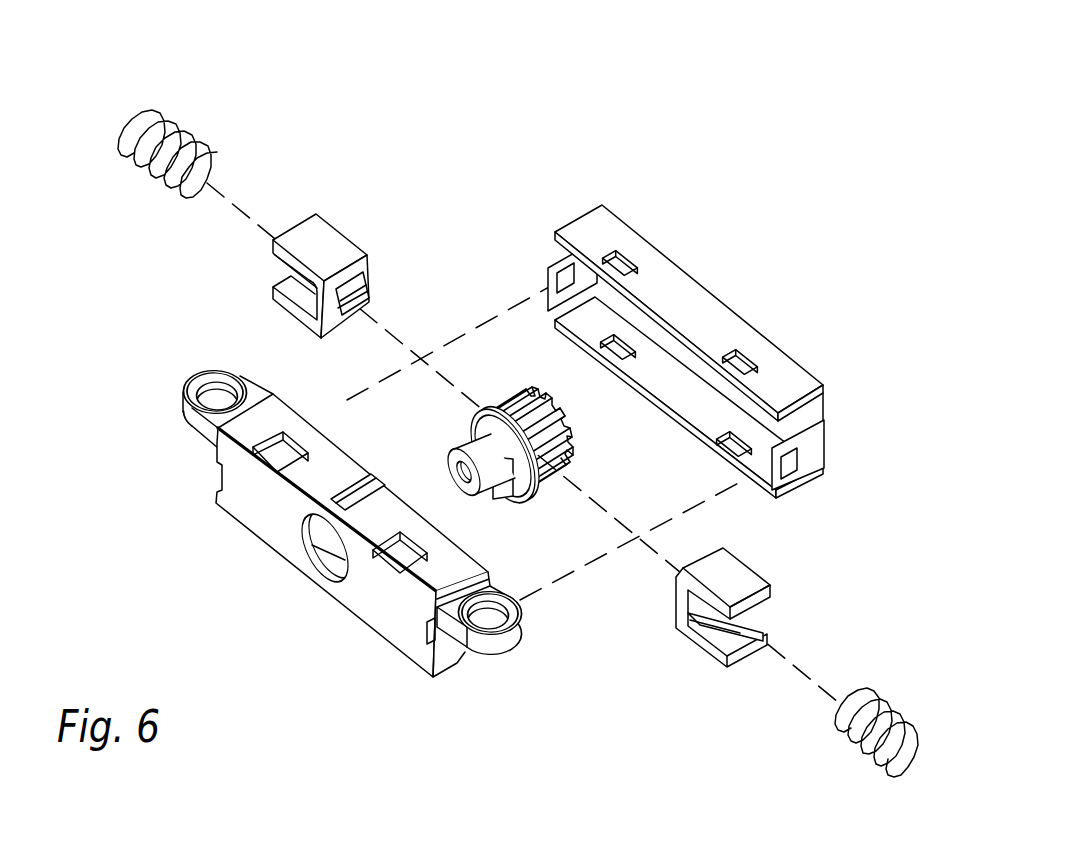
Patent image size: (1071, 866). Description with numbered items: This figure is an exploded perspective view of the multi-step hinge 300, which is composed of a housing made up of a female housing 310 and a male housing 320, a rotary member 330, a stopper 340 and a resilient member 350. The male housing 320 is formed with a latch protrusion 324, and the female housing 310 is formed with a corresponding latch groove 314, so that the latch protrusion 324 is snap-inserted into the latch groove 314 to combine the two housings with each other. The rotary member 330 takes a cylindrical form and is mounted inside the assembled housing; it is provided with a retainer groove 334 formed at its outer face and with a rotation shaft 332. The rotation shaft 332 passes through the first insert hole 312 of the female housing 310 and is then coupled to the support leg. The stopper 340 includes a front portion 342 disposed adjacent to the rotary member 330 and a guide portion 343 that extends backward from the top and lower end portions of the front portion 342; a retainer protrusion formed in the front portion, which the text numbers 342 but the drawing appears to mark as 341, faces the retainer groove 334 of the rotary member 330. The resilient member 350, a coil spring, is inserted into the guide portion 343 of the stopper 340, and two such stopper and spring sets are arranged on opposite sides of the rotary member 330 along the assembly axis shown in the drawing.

The multi-step hinge 300 is at (541, 33).
The female housing 310 is at (341, 533).
The first insert hole 312 is at (332, 555).
The latch groove 314 is at (273, 458).
The male housing 320 is at (687, 362).
The latch protrusion 324 is at (748, 458).
The rotary member 330 is at (464, 444).
The rotation shaft 332 is at (487, 440).
The retainer groove 334 is at (528, 385).
The stopper 340 is at (461, 428).
The clip tongue 341 is at (363, 297).
The front portion 342 is at (360, 270).
The guide portion 343 is at (327, 233).
The resilient member 350 is at (173, 133).